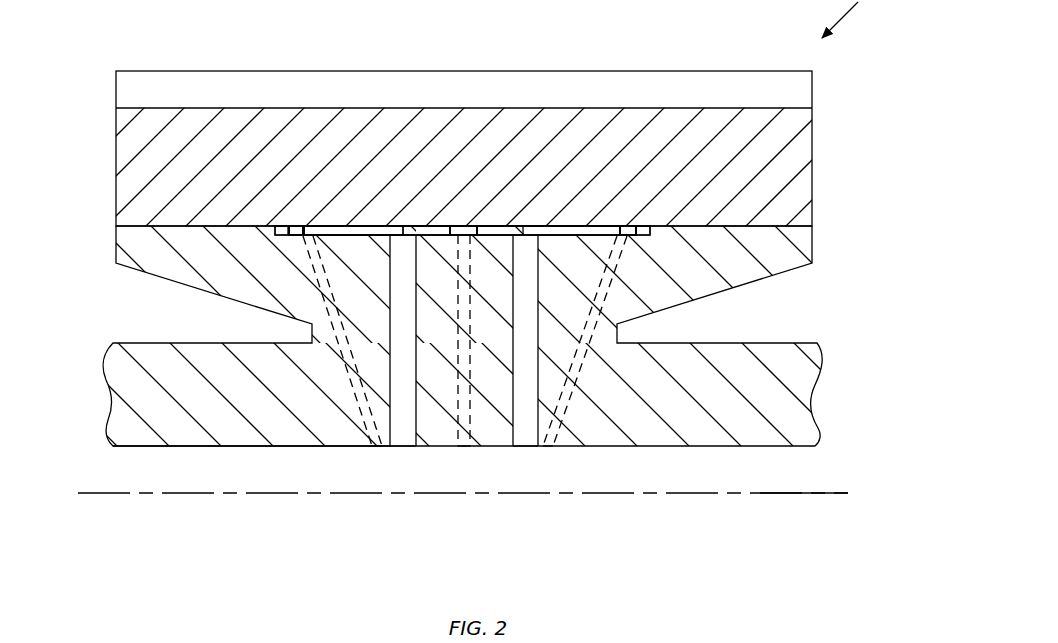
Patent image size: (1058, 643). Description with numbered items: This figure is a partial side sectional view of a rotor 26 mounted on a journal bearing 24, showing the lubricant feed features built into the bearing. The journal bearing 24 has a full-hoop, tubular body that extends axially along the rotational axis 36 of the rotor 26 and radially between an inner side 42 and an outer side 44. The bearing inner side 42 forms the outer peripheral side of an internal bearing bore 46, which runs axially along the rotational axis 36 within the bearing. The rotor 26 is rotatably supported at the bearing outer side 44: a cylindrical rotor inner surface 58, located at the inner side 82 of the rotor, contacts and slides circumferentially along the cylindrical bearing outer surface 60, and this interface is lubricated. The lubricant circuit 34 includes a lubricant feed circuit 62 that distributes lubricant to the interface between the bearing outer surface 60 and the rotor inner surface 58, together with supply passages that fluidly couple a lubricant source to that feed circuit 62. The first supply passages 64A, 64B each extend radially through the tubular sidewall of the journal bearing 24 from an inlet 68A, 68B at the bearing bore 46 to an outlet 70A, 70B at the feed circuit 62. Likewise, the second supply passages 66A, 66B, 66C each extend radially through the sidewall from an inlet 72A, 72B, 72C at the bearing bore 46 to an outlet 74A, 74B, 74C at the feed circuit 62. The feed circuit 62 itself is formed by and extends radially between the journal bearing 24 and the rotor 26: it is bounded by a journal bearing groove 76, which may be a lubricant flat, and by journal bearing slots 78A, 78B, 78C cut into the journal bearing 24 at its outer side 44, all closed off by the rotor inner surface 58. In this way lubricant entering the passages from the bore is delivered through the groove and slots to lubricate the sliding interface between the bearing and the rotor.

The journal bearing 24 is at (838, 342).
The rotor 26 is at (822, 148).
The lubricant circuit 34 is at (463, 183).
The rotational axis 36 is at (845, 495).
The inner side of the journal bearing 42 is at (147, 446).
The outer side of the journal bearing 44 is at (419, 213).
The bearing bore 46 is at (783, 470).
The rotor inner surface 58 is at (462, 230).
The bearing outer surface 60 is at (145, 232).
The lubricant feed circuit 62 is at (576, 227).
The first supply passage 64A is at (386, 389).
The first supply passage 64B is at (542, 388).
The second supply passage 66A is at (342, 363).
The second supply passage 66B is at (588, 363).
The second supply passage 66C is at (457, 394).
The inlet of first supply passage 68A is at (405, 446).
The inlet of first supply passage 68B is at (525, 446).
The outlet of first supply passage 70A is at (403, 235).
The outlet of first supply passage 70B is at (525, 235).
The inlet of second supply passage 72A is at (380, 446).
The inlet of second supply passage 72B is at (546, 446).
The inlet of second supply passage 72C is at (462, 446).
The outlet of second supply passage 74A is at (306, 235).
The outlet of second supply passage 74B is at (630, 235).
The outlet of second supply passage 74C is at (465, 240).
The journal bearing groove 76 is at (352, 228).
The journal bearing slot 78A is at (282, 226).
The journal bearing slot 78B is at (648, 226).
The journal bearing slot 78C is at (462, 226).
The inner side of the rotor 82 is at (462, 230).